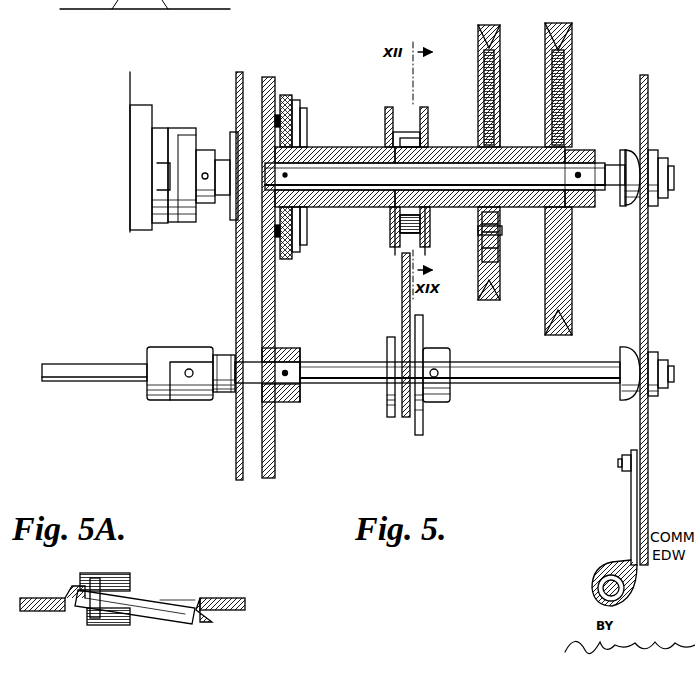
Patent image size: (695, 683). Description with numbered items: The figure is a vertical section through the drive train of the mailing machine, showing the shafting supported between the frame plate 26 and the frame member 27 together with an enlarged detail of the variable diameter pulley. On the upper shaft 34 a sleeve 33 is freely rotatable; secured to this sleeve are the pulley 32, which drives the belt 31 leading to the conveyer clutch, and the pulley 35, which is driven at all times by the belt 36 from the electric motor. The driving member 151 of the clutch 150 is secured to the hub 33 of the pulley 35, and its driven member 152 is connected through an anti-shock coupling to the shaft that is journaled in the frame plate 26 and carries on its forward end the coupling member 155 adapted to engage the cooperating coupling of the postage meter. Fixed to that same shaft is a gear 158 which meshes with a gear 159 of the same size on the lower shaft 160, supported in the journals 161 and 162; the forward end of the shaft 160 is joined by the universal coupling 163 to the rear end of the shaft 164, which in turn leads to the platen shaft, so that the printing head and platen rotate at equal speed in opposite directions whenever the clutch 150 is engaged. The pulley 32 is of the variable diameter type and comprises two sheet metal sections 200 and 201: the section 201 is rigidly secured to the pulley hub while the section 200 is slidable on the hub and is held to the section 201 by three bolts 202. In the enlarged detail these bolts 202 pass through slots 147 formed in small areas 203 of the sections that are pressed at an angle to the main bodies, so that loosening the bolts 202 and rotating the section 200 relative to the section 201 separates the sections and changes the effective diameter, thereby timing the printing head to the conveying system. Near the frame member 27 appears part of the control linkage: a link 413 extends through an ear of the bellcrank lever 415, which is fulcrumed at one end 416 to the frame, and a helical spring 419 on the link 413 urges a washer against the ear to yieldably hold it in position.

In FIG. 5, the frame plate 26 is at (236, 446).
In FIG. 5, the frame member 27 is at (648, 270).
In FIG. 5, the belt 31 is at (494, 38).
In FIG. 5, the pulley 32 is at (500, 80).
In FIG. 5, the sleeve 33 is at (514, 147).
In FIG. 5, the shaft 34 is at (604, 160).
In FIG. 5, the pulley 35 is at (568, 82).
In FIG. 5, the belt 36 is at (570, 24).
In FIG. 5A, the slots 147 is at (152, 614).
In FIG. 5, the clutch 150 is at (424, 100).
In FIG. 5, the driving member 151 is at (428, 128).
In FIG. 5, the driven member 152 is at (333, 147).
In FIG. 5, the coupling member 155 is at (172, 115).
In FIG. 5, the gear 158 is at (275, 95).
In FIG. 5, the gear 159 is at (275, 326).
In FIG. 5, the shaft 160 is at (320, 370).
In FIG. 5, the journal 161 is at (220, 400).
In FIG. 5, the journal 162 is at (660, 360).
In FIG. 5, the universal coupling 163 is at (191, 377).
In FIG. 5, the shaft 164 is at (68, 347).
In FIG. 5, the pulley section 200 is at (496, 100).
In FIG. 5A, the pulley section 200 is at (232, 598).
In FIG. 5, the pulley section 201 is at (482, 82).
In FIG. 5A, the pulley section 201 is at (228, 612).
In FIG. 5, the bolts 202 is at (478, 258).
In FIG. 5A, the bolts 202 is at (82, 608).
In FIG. 5, the areas 203 is at (480, 236).
In FIG. 5A, the areas 203 is at (192, 598).
In FIG. 5, the link 413 is at (603, 594).
In FIG. 5, the bellcrank lever 415 is at (628, 509).
In FIG. 5, the fulcrum end 416 is at (618, 466).
In FIG. 5, the helical spring 419 is at (598, 580).